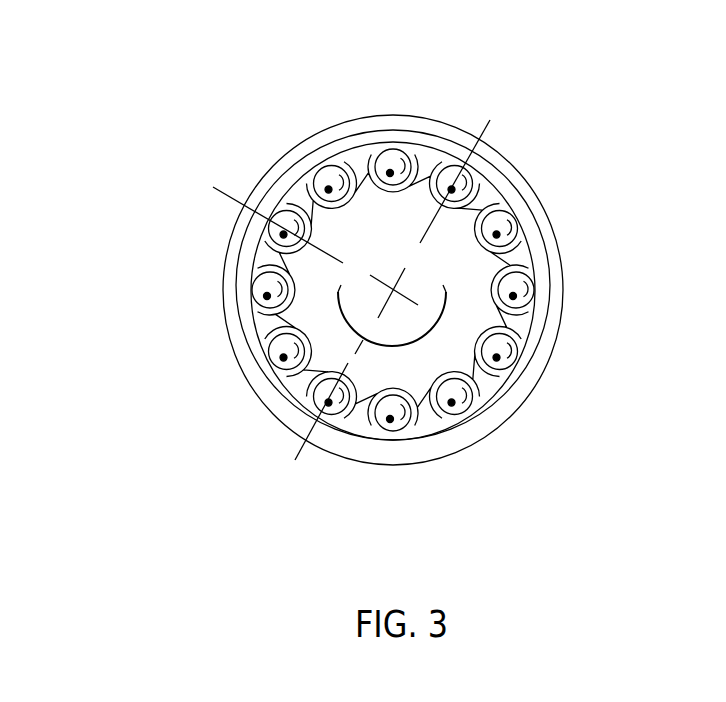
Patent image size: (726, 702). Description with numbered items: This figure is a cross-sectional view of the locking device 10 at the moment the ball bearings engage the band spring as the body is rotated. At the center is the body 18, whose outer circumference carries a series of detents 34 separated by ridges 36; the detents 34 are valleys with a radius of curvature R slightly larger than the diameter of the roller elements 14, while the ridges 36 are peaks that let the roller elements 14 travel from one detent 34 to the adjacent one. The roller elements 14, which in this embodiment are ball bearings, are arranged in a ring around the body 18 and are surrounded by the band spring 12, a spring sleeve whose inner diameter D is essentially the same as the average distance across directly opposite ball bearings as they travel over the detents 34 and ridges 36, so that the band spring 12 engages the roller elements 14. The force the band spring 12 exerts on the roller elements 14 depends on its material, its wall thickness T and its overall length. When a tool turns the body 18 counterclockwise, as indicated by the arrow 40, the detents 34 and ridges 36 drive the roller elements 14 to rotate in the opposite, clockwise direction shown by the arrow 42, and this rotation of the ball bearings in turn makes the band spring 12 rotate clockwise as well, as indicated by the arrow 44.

The locking device 10 is at (230, 147).
The band spring 12 is at (566, 238).
The arrow 44 is at (536, 205).
The detents 34 is at (493, 317).
The roller elements 14 is at (516, 285).
The arrow 42 is at (327, 186).
The ridges 36 is at (361, 188).
The body 18 is at (421, 172).
The arrow 40 is at (419, 333).
The radius of curvature R is at (438, 320).
The inner diameter D is at (522, 264).
The wall thickness T is at (348, 443).